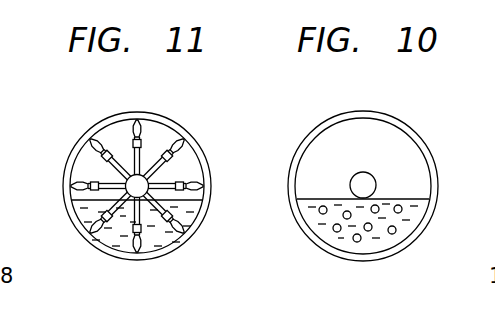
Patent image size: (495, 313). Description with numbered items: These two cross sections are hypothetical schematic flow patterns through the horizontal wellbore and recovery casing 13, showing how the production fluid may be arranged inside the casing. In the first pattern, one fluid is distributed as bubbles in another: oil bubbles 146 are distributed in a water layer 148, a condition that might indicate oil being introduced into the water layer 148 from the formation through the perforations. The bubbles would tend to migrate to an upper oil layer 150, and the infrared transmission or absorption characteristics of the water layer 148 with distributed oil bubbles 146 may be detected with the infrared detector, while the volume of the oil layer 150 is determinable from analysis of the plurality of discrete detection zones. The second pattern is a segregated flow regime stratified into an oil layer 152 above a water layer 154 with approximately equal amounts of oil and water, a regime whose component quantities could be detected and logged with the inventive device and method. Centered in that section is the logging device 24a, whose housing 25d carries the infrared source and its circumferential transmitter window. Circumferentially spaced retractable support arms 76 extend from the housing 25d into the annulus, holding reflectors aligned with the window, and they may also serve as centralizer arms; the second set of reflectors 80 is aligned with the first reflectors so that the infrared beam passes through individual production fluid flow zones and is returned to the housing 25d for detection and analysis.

In FIG. 11, the tank wall 13 is at (124, 113).
In FIG. 10, the tank wall 13 is at (372, 110).
In FIG. 11, the logging device 24a is at (186, 171).
In FIG. 10, the logging device 24a is at (386, 169).
In FIG. 11, the housing 25d is at (147, 178).
In FIG. 11, the support arms 76 is at (130, 148).
In FIG. 11, the reflectors 80 is at (144, 146).
In FIG. 10, the oil bubbles 146 is at (359, 242).
In FIG. 10, the water layer 148 is at (345, 239).
In FIG. 10, the oil layer 150 is at (352, 130).
In FIG. 11, the oil layer 152 is at (83, 167).
In FIG. 11, the water layer 154 is at (155, 233).